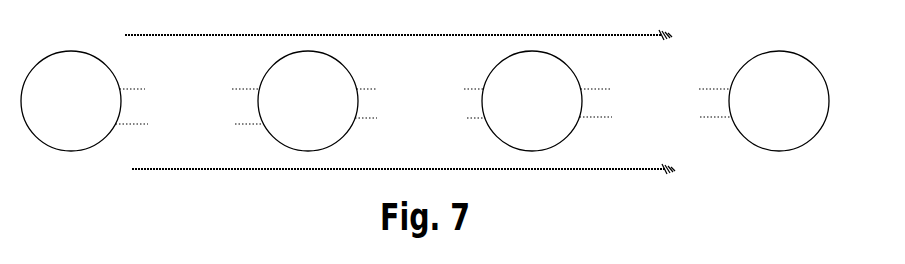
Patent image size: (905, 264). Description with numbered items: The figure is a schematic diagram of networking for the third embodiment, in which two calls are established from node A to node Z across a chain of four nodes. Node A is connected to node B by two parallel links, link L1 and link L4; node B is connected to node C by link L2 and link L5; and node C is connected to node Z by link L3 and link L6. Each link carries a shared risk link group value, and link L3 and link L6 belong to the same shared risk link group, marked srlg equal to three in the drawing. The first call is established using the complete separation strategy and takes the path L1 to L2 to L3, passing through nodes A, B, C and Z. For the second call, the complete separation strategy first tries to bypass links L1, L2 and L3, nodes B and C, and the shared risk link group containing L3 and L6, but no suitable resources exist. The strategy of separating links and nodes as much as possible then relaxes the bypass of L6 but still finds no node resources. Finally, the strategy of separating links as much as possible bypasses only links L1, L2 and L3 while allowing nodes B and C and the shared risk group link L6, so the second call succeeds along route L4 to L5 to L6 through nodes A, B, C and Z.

The node A is at (71, 101).
The node B is at (308, 101).
The node C is at (532, 101).
The node Z is at (779, 101).
The link L1 is at (190, 89).
The link L2 is at (420, 89).
The link L3 is at (656, 89).
The link L4 is at (190, 124).
The link L5 is at (420, 118).
The link L6 is at (656, 116).